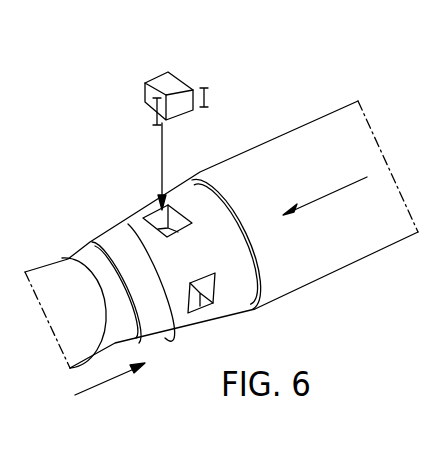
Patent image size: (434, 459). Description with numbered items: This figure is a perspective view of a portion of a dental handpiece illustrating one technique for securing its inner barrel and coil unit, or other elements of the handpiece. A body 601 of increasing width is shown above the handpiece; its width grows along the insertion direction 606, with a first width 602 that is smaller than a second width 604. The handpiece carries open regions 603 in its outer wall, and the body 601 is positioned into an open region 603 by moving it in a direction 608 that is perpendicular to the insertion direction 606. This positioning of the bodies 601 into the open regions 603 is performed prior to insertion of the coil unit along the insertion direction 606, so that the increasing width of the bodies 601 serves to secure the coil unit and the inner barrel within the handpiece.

The body 601 is at (148, 67).
The first width 602 is at (209, 96).
The open region 603 is at (149, 213).
The second width 604 is at (155, 112).
The insertion direction 606 is at (103, 384).
The direction perpendicular to the insertion direction 608 is at (160, 158).